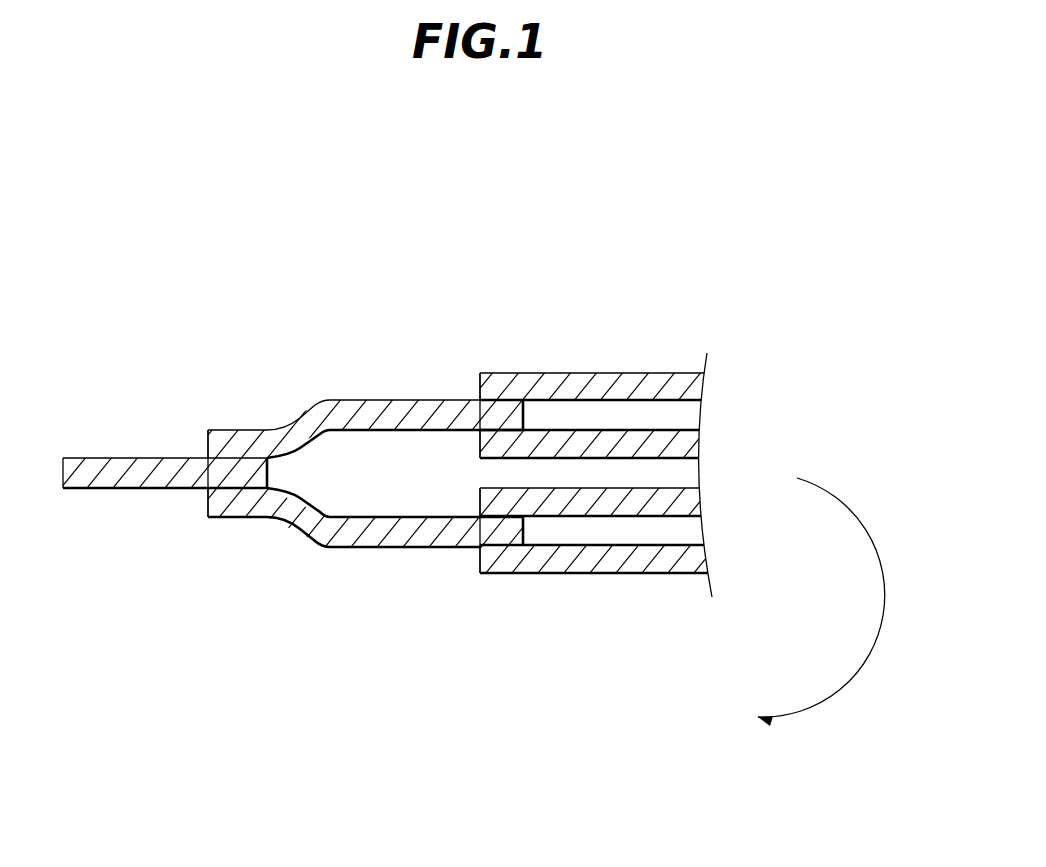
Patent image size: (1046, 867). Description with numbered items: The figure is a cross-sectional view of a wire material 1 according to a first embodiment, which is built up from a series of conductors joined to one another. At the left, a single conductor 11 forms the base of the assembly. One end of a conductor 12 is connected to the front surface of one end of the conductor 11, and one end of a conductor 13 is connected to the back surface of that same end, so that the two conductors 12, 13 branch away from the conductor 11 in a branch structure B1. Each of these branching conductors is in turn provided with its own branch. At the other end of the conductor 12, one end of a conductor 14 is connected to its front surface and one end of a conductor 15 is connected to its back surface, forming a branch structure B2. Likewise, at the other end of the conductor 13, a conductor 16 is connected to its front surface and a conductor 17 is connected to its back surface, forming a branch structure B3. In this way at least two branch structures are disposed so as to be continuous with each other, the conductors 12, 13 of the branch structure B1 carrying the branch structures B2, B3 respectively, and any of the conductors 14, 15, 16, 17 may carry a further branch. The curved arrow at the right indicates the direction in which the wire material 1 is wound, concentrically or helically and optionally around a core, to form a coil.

The wire material 1 is at (500, 173).
The conductor 11 is at (123, 477).
The conductor 12 is at (367, 408).
The conductor 13 is at (382, 537).
The conductor 14 is at (693, 390).
The conductor 15 is at (693, 448).
The conductor 16 is at (695, 505).
The conductor 17 is at (710, 565).
The branch structure B1 is at (230, 540).
The branch structure B2 is at (527, 358).
The branch structure B3 is at (502, 597).